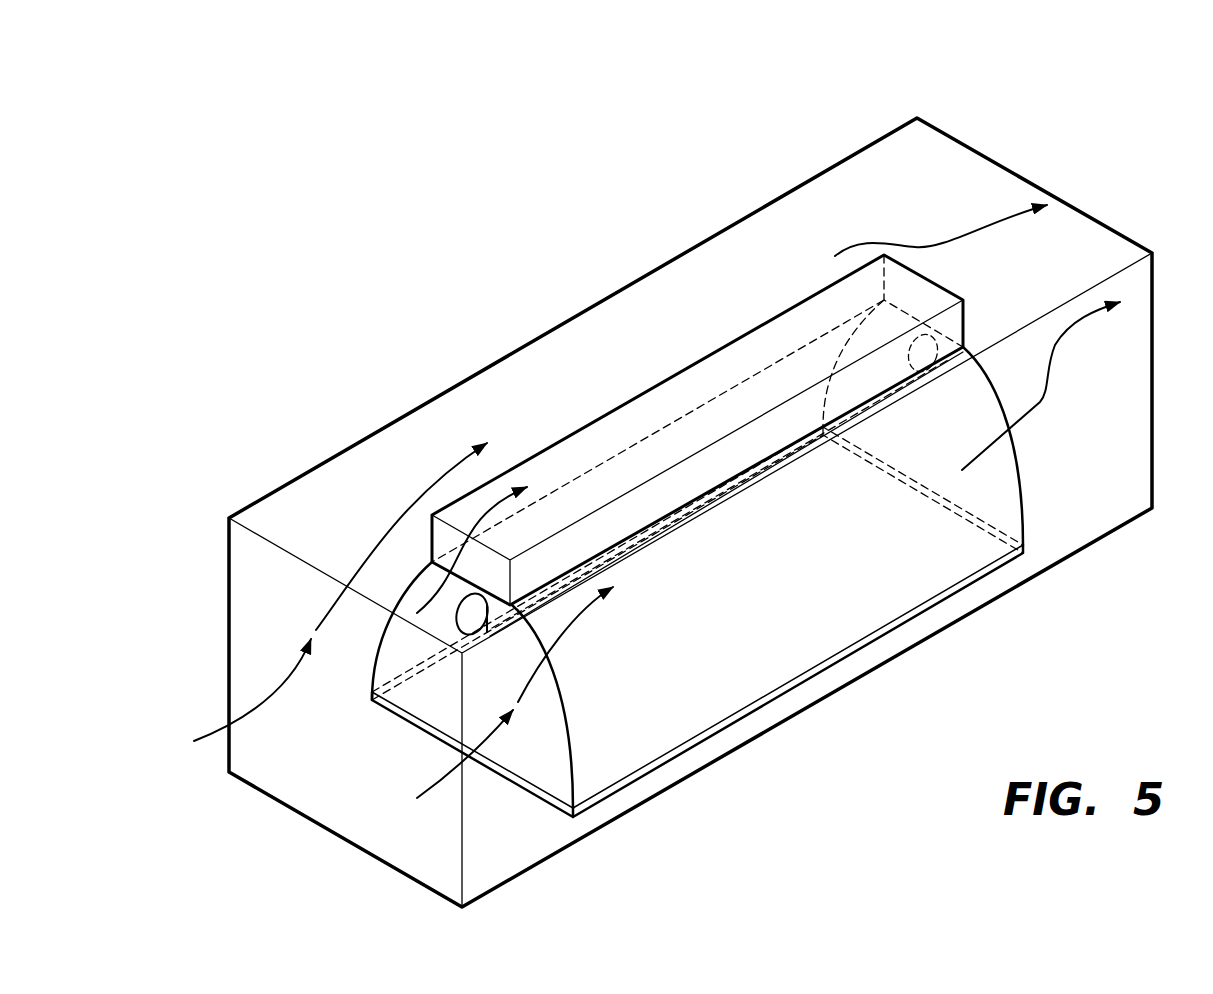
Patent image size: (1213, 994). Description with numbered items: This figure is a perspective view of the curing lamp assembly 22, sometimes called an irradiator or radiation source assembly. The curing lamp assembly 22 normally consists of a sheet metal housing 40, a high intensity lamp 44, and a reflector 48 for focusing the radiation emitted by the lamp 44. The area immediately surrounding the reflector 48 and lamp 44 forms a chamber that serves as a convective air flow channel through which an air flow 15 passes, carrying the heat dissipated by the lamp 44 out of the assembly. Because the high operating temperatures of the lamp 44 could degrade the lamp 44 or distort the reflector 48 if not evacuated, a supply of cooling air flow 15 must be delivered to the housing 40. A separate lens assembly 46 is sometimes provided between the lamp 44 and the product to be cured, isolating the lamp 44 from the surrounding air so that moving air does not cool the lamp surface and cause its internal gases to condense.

The air flow 15 is at (386, 525).
The curing lamp assembly 22 is at (1097, 160).
The sheet metal housing 40 is at (616, 372).
The high intensity lamp 44 is at (498, 620).
The lens assembly 46 is at (525, 787).
The reflector 48 is at (571, 738).